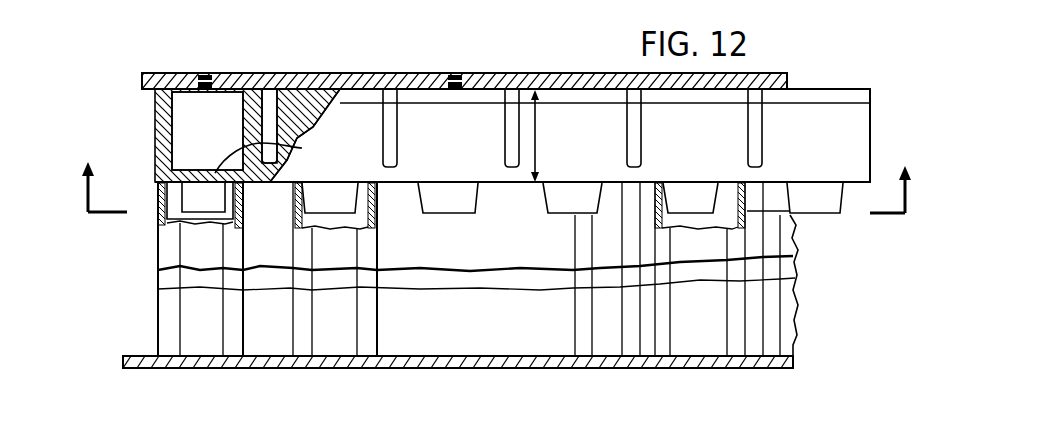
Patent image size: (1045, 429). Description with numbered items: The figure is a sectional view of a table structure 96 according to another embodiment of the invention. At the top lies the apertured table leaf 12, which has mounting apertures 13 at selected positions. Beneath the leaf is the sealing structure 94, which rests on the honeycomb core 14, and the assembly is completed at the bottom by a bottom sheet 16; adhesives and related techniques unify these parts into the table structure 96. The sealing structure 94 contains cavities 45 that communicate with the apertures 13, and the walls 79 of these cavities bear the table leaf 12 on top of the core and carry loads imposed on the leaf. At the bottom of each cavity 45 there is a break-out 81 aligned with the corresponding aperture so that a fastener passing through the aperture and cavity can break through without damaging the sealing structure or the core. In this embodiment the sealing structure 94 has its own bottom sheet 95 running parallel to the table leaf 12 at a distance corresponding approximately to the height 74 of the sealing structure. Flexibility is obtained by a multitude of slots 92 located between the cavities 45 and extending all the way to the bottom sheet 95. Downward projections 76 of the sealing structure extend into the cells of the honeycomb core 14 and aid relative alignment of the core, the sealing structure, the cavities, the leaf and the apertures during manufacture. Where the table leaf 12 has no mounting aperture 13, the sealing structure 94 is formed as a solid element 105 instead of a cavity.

The table leaf 12 is at (587, 78).
The aperture 13 is at (213, 76).
The honeycomb core 14 is at (158, 318).
The bottom sheet 16 is at (466, 368).
The cavity 45 is at (220, 131).
The height 74 is at (537, 135).
The projection 76 is at (161, 202).
The wall 79 is at (270, 92).
The break-out 81 is at (275, 157).
The slot 92 is at (510, 88).
The sealing structure 94 is at (142, 96).
The bottom sheet 95 is at (279, 184).
The table structure 96 is at (147, 261).
The solid element 105 is at (305, 100).